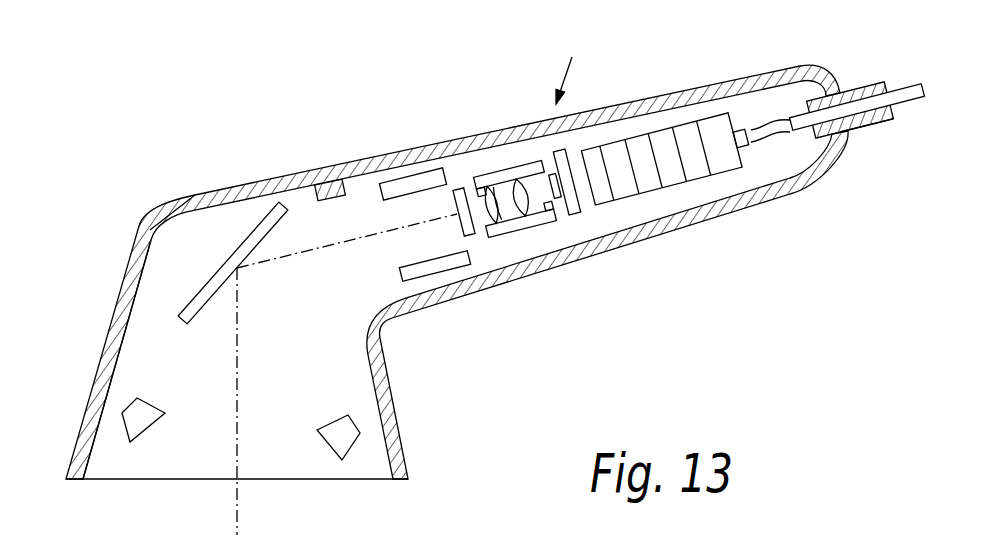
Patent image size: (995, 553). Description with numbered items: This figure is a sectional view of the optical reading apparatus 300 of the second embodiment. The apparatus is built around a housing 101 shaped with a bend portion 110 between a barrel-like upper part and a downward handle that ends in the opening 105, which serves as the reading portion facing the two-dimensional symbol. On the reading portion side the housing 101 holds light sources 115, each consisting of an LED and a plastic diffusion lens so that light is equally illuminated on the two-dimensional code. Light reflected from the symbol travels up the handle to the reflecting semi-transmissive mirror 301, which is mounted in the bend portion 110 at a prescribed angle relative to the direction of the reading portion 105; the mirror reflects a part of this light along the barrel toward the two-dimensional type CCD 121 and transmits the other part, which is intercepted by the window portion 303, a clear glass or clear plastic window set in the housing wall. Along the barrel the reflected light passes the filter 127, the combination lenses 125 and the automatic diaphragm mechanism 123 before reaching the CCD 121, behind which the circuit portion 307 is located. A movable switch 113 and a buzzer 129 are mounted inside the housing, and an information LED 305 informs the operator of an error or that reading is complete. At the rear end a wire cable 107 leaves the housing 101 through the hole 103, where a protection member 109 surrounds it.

The housing 101 is at (673, 92).
The hole 103 is at (836, 84).
The opening 105 is at (253, 481).
The wire cable 107 is at (911, 108).
The protection member 109 is at (881, 134).
The bend portion 110 is at (285, 297).
The movable switch 113 is at (398, 185).
The light sources 115 is at (150, 427).
The two-dimensional type CCD 121 is at (581, 220).
The automatic diaphragm mechanism 123 is at (553, 222).
The combination lenses 125 is at (500, 226).
The filter 127 is at (462, 188).
The buzzer 129 is at (438, 266).
The optical reading apparatus 300 is at (576, 67).
The reflecting semi-transmissive mirror 301 is at (207, 300).
The window portion 303 is at (217, 190).
The information LED 305 is at (323, 183).
The circuit portion 307 is at (700, 177).